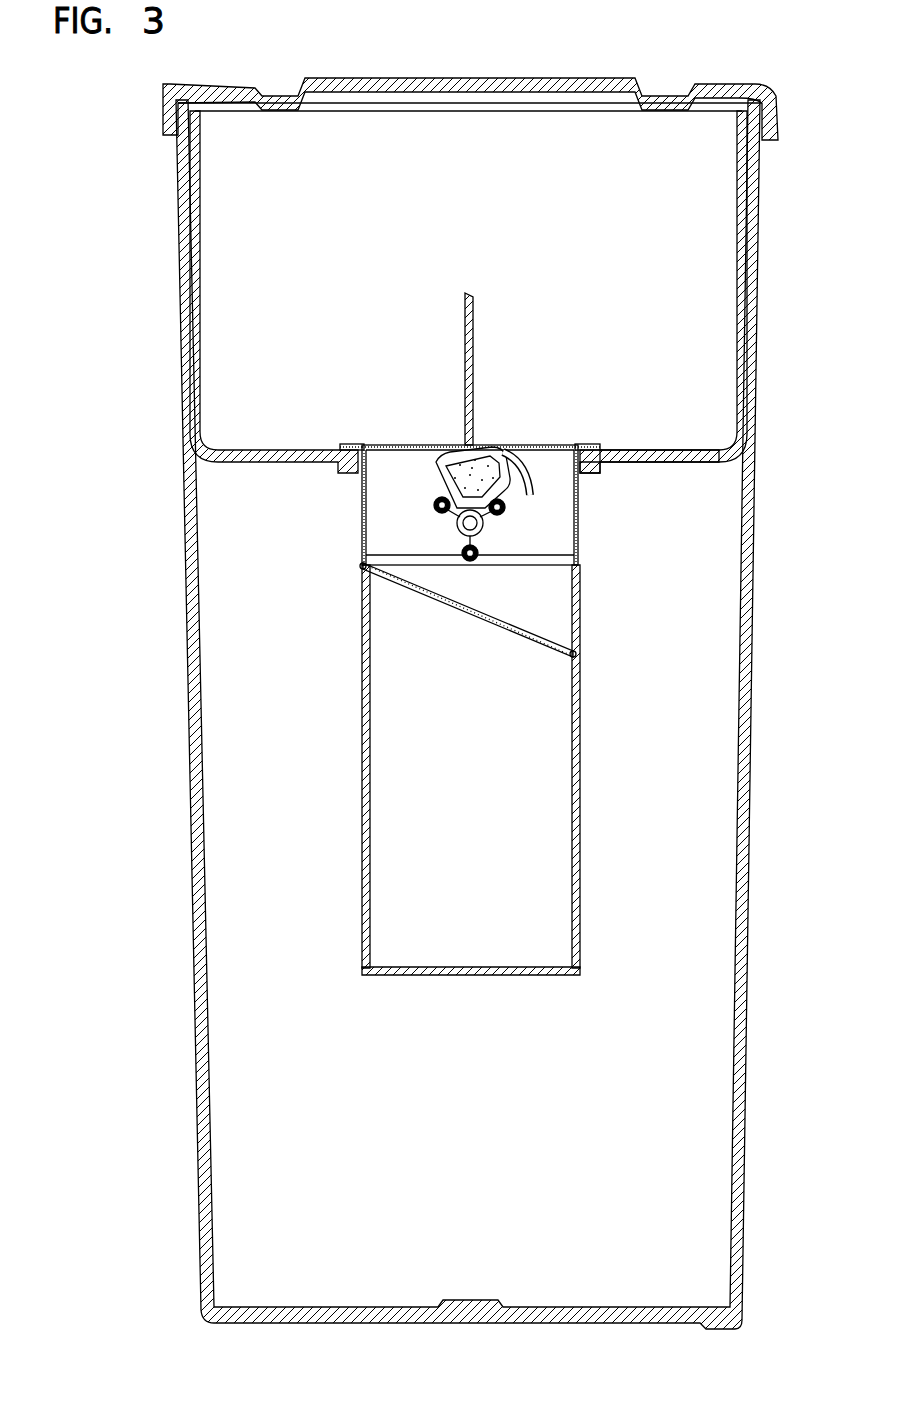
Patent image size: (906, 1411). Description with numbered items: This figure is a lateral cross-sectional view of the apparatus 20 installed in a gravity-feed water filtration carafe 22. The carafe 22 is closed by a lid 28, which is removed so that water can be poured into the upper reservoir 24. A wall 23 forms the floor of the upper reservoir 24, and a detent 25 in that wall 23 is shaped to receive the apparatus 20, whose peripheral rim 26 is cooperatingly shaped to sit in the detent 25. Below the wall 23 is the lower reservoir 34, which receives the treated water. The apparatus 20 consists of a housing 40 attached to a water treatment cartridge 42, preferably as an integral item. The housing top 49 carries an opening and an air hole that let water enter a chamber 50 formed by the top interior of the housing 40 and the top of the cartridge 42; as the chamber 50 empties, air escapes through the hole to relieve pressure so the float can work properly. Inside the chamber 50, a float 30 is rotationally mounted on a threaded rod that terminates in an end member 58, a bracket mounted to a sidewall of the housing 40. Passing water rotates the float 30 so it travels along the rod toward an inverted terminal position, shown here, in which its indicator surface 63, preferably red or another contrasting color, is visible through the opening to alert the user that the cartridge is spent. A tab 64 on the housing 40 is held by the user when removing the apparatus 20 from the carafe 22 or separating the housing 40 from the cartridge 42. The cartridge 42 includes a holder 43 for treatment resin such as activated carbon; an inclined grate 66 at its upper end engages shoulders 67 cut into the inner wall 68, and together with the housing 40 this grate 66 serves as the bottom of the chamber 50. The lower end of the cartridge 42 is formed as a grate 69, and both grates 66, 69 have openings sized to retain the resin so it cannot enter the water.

The apparatus 20 is at (357, 497).
The water filtration carafe 22 is at (184, 692).
The wall 23 is at (258, 447).
The upper reservoir 24 is at (367, 233).
The detent 25 is at (598, 472).
The peripheral rim 26 is at (590, 448).
The lid 28 is at (431, 84).
The float 30 is at (498, 446).
The lower reservoir 34 is at (490, 1228).
The housing 40 is at (581, 537).
The cartridge 42 is at (490, 818).
The holder 43 is at (584, 855).
The housing top 49 is at (400, 443).
The chamber 50 is at (417, 494).
The end member 58 is at (437, 512).
The indicator surface 63 is at (520, 474).
The tab 64 is at (472, 338).
The inclined grate 66 is at (530, 628).
The shoulders 67 is at (362, 567).
The inner wall 68 is at (365, 740).
The grate 69 is at (553, 970).